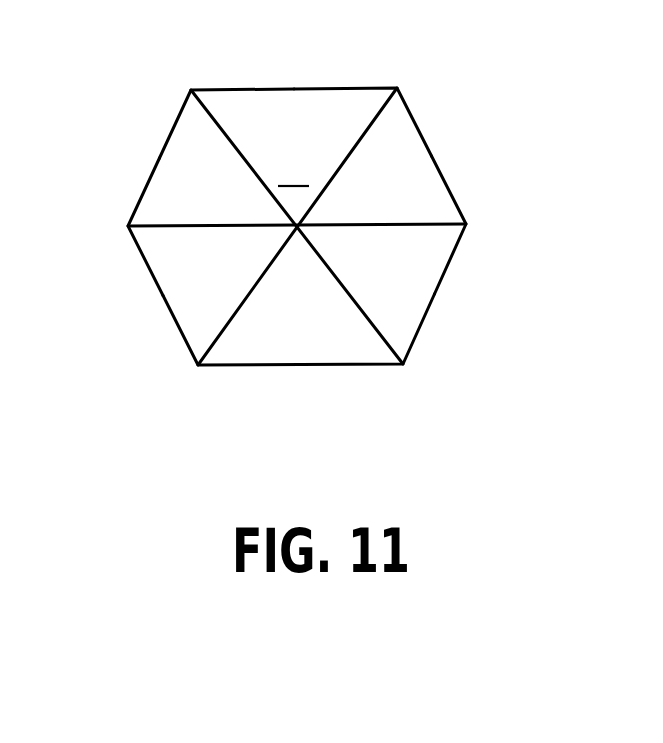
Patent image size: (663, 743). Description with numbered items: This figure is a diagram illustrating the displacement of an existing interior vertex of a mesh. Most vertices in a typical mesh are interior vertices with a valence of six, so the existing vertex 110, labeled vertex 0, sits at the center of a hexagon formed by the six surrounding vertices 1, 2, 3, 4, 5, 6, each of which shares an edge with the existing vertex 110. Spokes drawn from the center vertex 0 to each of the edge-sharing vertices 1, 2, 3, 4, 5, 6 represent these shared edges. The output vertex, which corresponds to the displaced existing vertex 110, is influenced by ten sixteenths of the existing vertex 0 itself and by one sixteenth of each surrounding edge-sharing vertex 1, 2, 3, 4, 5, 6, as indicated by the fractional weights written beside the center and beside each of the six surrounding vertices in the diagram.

The existing vertex 110 is at (276, 232).
The existing vertex 0 is at (297, 226).
The edge-sharing vertex 1 is at (232, 352).
The edge-sharing vertex 2 is at (131, 227).
The edge-sharing vertex 3 is at (227, 110).
The edge-sharing vertex 4 is at (363, 106).
The edge-sharing vertex 5 is at (462, 225).
The edge-sharing vertex 6 is at (368, 346).